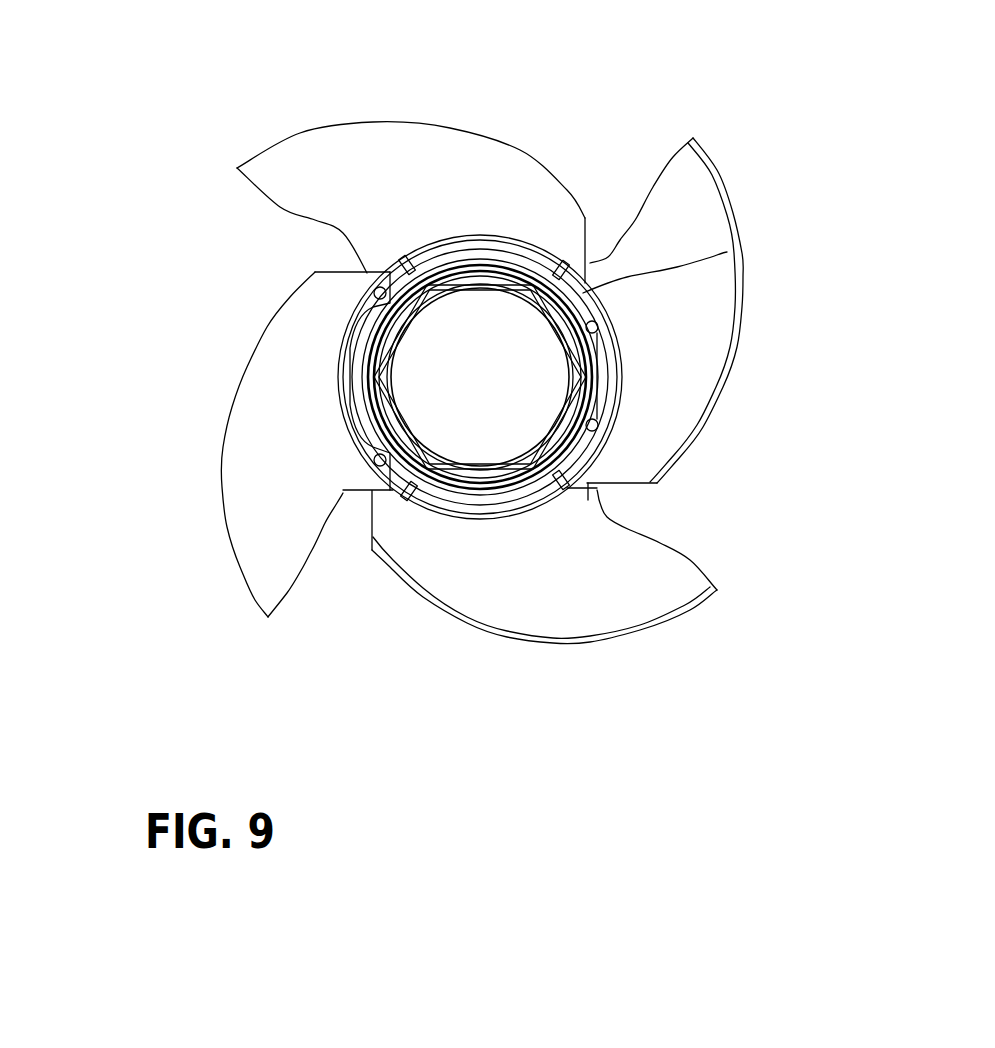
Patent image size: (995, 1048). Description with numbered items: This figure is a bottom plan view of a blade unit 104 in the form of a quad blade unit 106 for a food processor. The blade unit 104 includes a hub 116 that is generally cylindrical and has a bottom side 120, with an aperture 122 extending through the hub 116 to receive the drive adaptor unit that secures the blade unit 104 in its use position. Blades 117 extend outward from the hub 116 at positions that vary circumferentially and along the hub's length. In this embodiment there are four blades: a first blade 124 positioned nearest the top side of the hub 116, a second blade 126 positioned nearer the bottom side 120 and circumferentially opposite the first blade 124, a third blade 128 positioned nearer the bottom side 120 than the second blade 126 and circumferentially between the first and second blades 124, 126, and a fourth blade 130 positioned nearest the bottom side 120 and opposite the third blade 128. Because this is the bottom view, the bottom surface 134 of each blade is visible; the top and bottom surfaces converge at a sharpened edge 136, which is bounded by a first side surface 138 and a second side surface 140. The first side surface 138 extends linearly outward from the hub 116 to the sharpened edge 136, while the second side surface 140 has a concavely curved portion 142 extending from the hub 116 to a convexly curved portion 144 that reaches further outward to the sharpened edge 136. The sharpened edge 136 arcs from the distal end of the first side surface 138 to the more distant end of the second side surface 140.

The blade unit 104 is at (158, 104).
The quad blade unit 106 is at (156, 151).
The hub 116 is at (583, 303).
The blades 117 is at (525, 237).
The bottom side 120 is at (507, 250).
The aperture 122 is at (457, 398).
The first blade 124 is at (508, 570).
The second blade 126 is at (422, 207).
The third blade 128 is at (654, 350).
The fourth blade 130 is at (284, 440).
The bottom surface 134 is at (297, 183).
The sharpened edge 136 is at (420, 123).
The first side surface 138 is at (593, 260).
The second side surface 140 is at (639, 212).
The concavely curved portion 142 is at (608, 257).
The convexly curved portion 144 is at (660, 160).